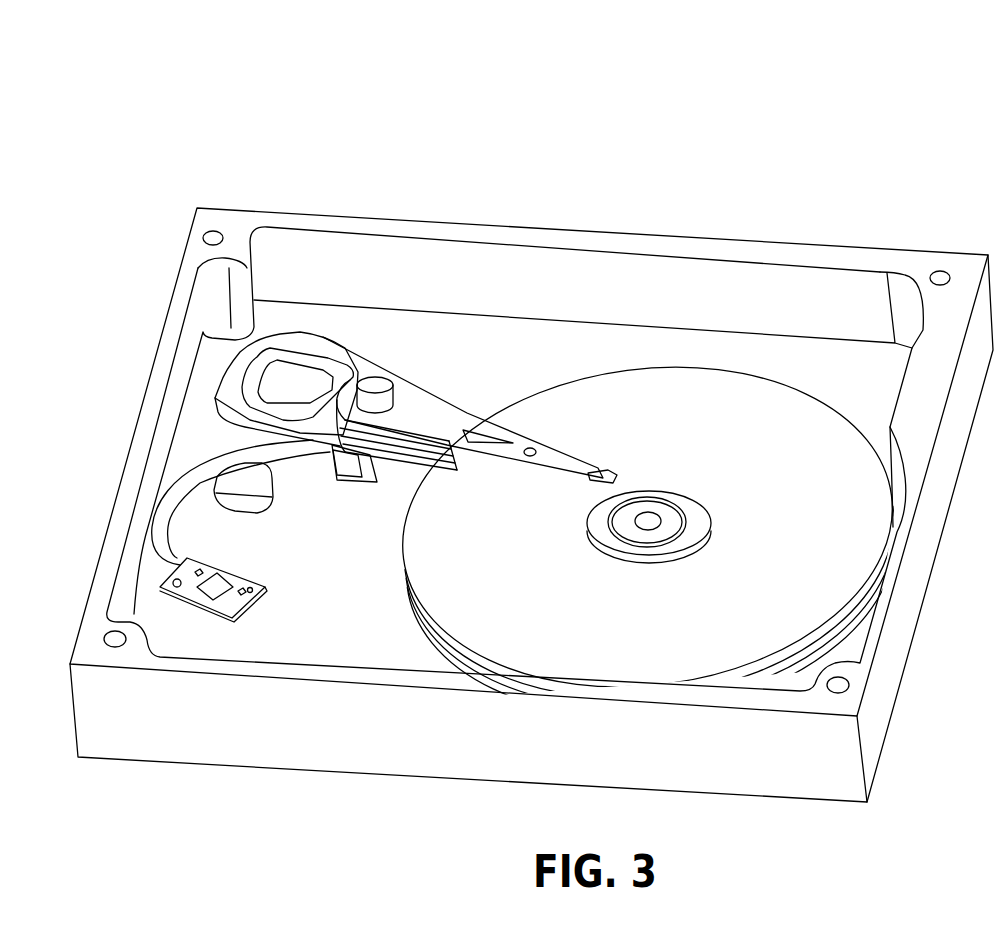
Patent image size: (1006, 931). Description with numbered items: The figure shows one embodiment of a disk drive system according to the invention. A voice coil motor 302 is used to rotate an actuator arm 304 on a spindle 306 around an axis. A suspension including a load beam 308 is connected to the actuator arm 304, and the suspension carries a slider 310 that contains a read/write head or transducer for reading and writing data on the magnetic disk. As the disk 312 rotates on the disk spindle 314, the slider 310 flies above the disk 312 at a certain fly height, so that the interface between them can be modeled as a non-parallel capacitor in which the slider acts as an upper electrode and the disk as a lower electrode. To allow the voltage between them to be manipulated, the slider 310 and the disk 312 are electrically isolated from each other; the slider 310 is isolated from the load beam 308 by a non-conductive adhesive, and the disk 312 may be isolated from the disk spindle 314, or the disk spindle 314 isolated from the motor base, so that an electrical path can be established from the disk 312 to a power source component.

The voice coil motor 302 is at (302, 335).
The actuator arm 304 is at (300, 362).
The spindle 306 is at (378, 393).
The load beam 308 is at (543, 448).
The slider 310 is at (610, 470).
The disk 312 is at (765, 463).
The disk spindle 314 is at (650, 510).